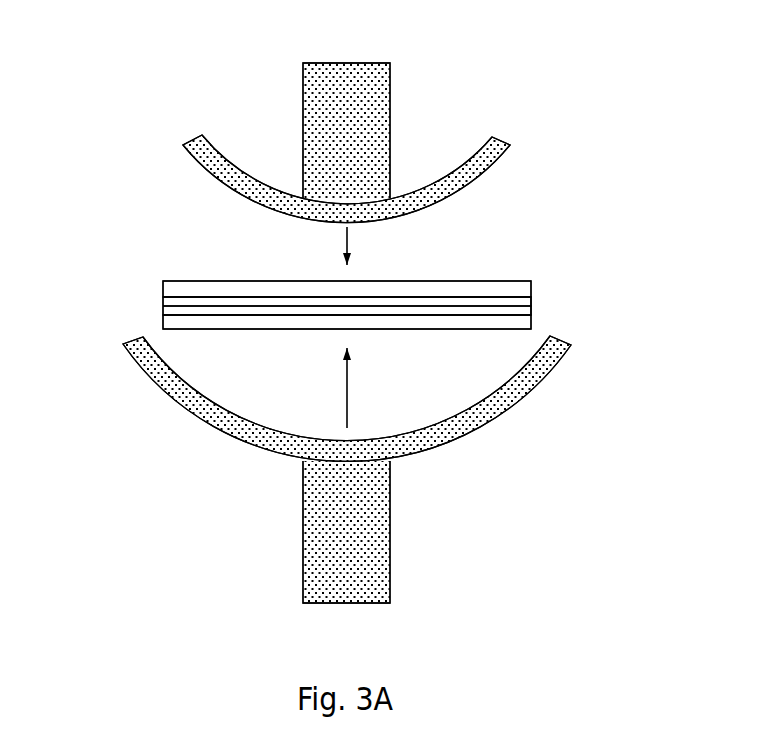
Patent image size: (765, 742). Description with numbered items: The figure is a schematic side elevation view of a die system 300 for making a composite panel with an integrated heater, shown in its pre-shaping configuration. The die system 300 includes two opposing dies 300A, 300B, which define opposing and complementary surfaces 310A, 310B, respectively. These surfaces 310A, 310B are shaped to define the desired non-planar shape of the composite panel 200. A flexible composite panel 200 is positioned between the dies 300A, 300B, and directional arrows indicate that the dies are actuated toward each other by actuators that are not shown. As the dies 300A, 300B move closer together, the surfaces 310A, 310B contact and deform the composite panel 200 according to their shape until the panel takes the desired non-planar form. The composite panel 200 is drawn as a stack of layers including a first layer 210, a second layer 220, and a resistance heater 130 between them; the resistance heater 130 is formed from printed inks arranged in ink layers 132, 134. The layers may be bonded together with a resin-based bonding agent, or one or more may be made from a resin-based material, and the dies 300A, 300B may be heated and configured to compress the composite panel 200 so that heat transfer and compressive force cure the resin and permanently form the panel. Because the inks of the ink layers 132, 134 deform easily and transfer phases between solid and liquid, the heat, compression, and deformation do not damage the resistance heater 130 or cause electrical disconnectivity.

The die system 300 is at (339, 318).
The die 300A is at (358, 145).
The die 300B is at (347, 469).
The surface 310A is at (473, 183).
The surface 310B is at (483, 405).
The composite panel 200 is at (348, 289).
The second layer 220 is at (522, 287).
The first layer 210 is at (522, 320).
The resistance heater 130 is at (348, 309).
The ink layer 134 is at (168, 301).
The ink layer 132 is at (168, 308).